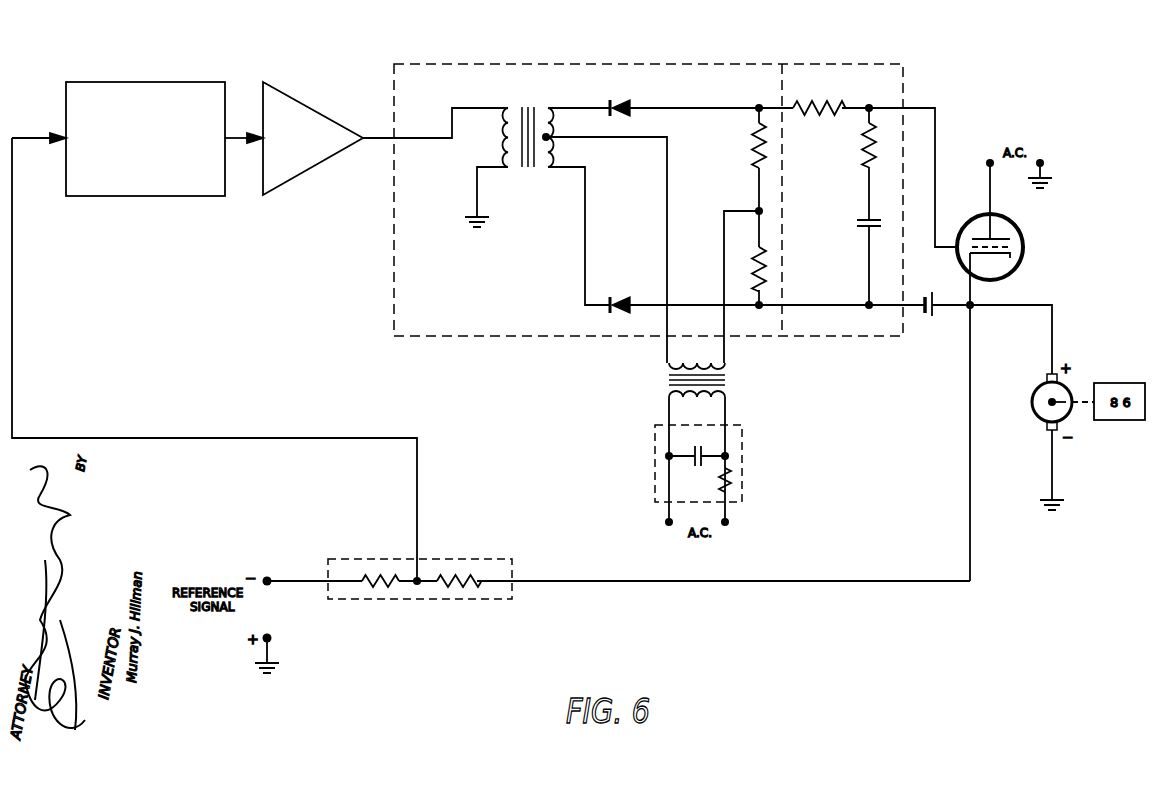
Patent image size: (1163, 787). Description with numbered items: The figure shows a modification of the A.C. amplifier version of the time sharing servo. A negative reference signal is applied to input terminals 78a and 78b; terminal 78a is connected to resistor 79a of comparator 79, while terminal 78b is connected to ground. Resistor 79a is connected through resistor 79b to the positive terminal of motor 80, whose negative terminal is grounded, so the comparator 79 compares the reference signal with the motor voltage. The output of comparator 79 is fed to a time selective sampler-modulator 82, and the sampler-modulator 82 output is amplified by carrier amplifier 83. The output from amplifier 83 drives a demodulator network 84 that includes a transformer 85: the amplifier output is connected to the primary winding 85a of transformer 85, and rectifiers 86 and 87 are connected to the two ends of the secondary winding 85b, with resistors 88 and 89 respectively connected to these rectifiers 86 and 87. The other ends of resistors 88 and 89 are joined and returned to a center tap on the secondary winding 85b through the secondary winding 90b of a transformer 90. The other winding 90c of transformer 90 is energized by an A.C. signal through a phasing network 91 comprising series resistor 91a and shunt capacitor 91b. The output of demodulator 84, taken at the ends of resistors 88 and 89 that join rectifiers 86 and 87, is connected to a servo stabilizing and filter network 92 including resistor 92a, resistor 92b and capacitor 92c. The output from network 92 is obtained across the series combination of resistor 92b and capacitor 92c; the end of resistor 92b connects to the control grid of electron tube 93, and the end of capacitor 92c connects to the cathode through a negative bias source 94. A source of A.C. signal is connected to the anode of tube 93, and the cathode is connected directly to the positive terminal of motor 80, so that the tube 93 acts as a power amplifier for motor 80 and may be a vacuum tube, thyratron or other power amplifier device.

The input terminal 78a is at (270, 578).
The input terminal 78b is at (270, 640).
The comparator 79 is at (445, 559).
The resistor 79a is at (384, 585).
The resistor 79b is at (460, 585).
The motor 80 is at (1037, 418).
The time selective sampler-modulator 82 is at (153, 196).
The carrier amplifier 83 is at (306, 172).
The demodulator network 84 is at (527, 64).
The transformer 85 is at (528, 172).
The primary winding 85a is at (507, 108).
The secondary winding 85b is at (550, 106).
The rectifier 86 is at (628, 100).
The rectifier 87 is at (625, 297).
The resistor 88 is at (752, 145).
The resistor 89 is at (752, 268).
The transformer 90 is at (730, 381).
The secondary winding 90b is at (667, 362).
The transformer secondary winding 90c is at (667, 403).
The phasing network 91 is at (742, 463).
The series resistor 91a is at (720, 480).
The shunt capacitor 91b is at (695, 447).
The servo stabilizing and filter network 92 is at (822, 64).
The resistor 92a is at (815, 112).
The resistor 92b is at (862, 158).
The capacitor 92c is at (862, 228).
The electron tube 93 is at (1020, 262).
The negative bias source 94 is at (932, 312).